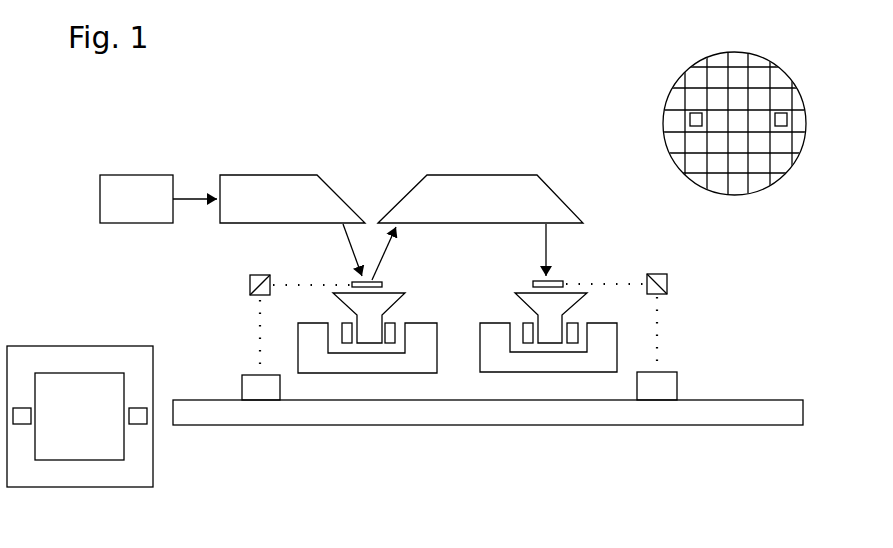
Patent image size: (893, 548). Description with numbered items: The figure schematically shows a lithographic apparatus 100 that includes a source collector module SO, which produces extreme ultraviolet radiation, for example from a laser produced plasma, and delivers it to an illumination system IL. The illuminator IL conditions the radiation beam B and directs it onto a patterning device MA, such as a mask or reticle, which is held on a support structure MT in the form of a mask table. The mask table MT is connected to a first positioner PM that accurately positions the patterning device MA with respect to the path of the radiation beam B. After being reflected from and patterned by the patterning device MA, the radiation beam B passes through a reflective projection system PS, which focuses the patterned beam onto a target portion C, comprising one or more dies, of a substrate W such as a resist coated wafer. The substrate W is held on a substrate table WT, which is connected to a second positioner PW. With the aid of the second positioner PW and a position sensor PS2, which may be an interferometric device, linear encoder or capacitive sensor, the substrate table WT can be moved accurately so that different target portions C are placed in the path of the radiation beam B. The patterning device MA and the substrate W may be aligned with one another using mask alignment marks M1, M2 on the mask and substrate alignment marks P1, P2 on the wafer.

The lithographic apparatus 100 is at (135, 155).
The source collector module SO is at (136, 199).
The illumination system IL is at (292, 199).
The projection system PS is at (480, 199).
The radiation beam B is at (348, 253).
The patterning device MA is at (56, 346).
The mask alignment mark M1 is at (138, 424).
The mask alignment mark M2 is at (22, 424).
The support structure MT is at (363, 343).
The first positioner PM is at (400, 373).
The substrate W is at (676, 159).
The substrate table WT is at (545, 343).
The second positioner PW is at (580, 372).
The position sensor PS2 is at (255, 275).
The substrate alignment mark P1 is at (696, 126).
The substrate alignment mark P2 is at (781, 126).
The target portion C is at (737, 111).